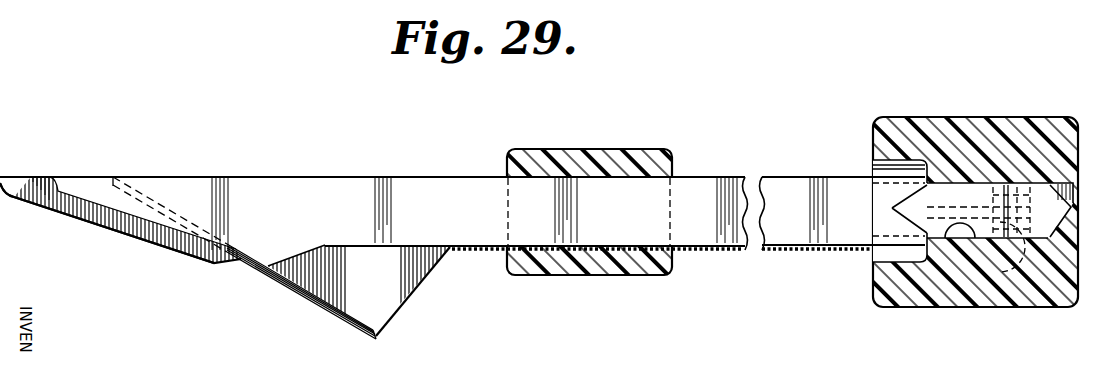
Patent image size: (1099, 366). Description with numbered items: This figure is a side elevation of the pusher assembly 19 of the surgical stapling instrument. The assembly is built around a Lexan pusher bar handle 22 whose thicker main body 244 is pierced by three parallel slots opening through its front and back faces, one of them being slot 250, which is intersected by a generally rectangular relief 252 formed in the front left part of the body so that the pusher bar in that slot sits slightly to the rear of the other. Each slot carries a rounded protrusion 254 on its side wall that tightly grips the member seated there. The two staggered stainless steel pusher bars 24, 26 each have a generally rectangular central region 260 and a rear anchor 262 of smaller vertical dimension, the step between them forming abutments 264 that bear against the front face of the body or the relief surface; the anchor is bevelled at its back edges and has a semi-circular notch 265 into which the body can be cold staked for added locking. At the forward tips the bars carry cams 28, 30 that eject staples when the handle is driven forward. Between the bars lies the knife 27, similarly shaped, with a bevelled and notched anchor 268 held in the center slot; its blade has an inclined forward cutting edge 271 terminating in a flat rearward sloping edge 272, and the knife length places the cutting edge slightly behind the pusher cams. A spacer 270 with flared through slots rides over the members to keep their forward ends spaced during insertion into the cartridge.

The pusher assembly 19 is at (443, 174).
The pusher bar handle 22 is at (975, 118).
The pusher bar 24 is at (30, 183).
The pusher bar 26 is at (272, 184).
The knife 27 is at (370, 308).
The cam 28 is at (112, 236).
The cam 30 is at (158, 249).
The main body 244 is at (980, 308).
The slot 250 is at (980, 180).
The relief 252 is at (880, 167).
The rounded protrusion 254 is at (987, 264).
The central region 260 is at (710, 183).
The rear anchor 262 is at (1050, 217).
The abutment 264 is at (935, 240).
The semi-circular notch 265 is at (958, 243).
The anchor 268 is at (900, 170).
The spacer 270 is at (598, 149).
The cutting edge 271 is at (310, 297).
The rearward sloping edge 272 is at (405, 302).